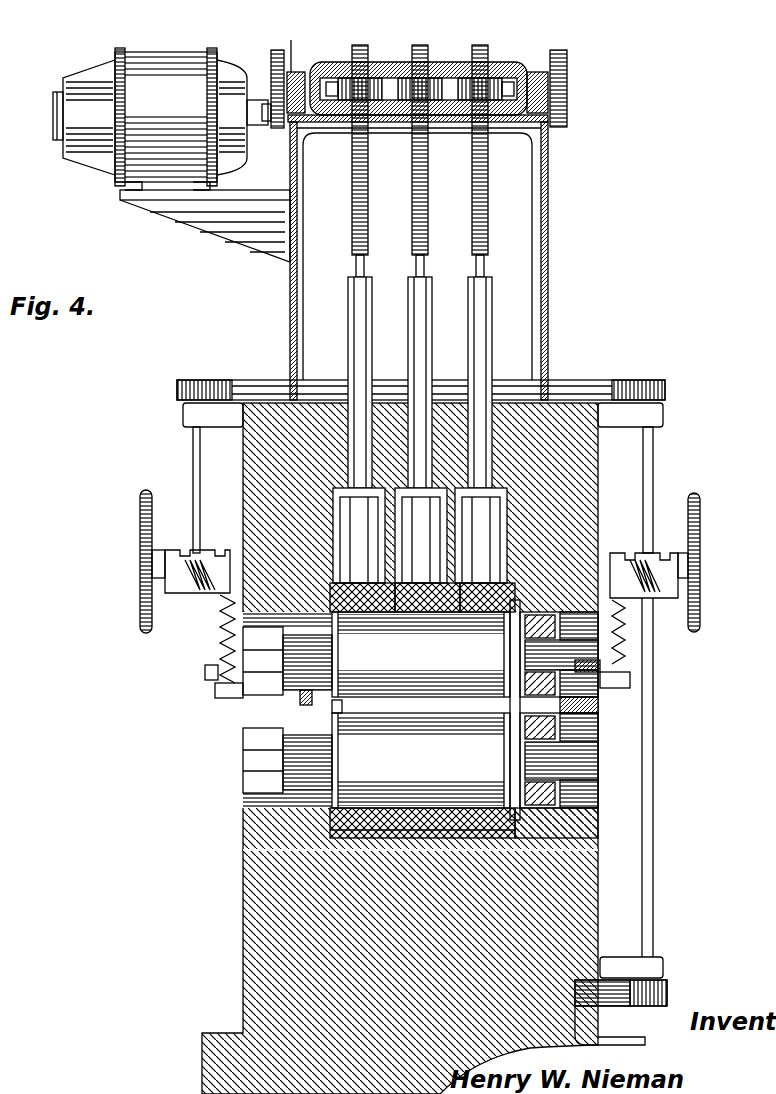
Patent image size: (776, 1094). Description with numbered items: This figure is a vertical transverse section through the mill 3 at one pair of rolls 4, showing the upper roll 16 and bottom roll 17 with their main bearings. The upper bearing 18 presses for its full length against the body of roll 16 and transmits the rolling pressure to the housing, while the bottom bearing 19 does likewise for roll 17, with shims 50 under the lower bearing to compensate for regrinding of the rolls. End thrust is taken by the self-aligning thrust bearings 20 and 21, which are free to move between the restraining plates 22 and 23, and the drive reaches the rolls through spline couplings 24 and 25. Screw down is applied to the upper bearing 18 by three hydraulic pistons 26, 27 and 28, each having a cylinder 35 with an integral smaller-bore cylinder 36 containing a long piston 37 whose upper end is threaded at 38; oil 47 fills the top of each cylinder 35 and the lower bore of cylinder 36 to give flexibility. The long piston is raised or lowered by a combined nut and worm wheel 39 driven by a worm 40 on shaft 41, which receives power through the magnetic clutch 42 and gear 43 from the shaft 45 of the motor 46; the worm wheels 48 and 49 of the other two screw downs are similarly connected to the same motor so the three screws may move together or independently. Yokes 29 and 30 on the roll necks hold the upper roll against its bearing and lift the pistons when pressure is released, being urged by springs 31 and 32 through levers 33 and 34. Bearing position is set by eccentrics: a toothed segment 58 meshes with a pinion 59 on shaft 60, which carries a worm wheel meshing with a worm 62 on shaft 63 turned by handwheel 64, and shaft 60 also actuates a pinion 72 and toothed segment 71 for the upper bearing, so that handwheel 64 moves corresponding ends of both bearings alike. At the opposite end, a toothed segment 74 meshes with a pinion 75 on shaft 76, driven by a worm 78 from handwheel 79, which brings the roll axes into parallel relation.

The mill 3 is at (245, 930).
The pair of rolls 4 is at (335, 725).
The upper roll 16 is at (421, 654).
The bottom roll 17 is at (421, 760).
The upper bearing 18 is at (330, 583).
The bottom bearing 19 is at (330, 822).
The thrust bearing 20 is at (512, 645).
The thrust bearing 21 is at (520, 740).
The restraining plate 22 is at (557, 830).
The restraining plate 23 is at (598, 808).
The spline coupling 24 is at (243, 632).
The spline coupling 25 is at (243, 764).
The hydraulic piston 26 is at (362, 615).
The hydraulic piston 27 is at (427, 612).
The hydraulic piston 28 is at (484, 612).
The yoke 29 is at (300, 702).
The yoke 30 is at (585, 695).
The spring 31 is at (625, 633).
The spring 32 is at (222, 645).
The lever 33 is at (628, 684).
The lever 34 is at (215, 690).
The cylinder 35 is at (507, 524).
The cylinder 36 is at (373, 341).
The long piston 37 is at (476, 266).
The threaded upper end 38 is at (368, 212).
The combined nut and worm wheel 39 is at (380, 66).
The worm 40 is at (330, 66).
The shaft 41 is at (291, 42).
The magnetic clutch 42 is at (322, 106).
The gear 43 is at (271, 60).
The motor shaft 45 is at (262, 128).
The motor 46 is at (157, 57).
The oil filling 47 is at (505, 482).
The worm wheel 48 is at (438, 64).
The worm wheel 49 is at (500, 66).
The shims 50 is at (345, 832).
The toothed segment 58 is at (625, 1007).
The pinion 59 is at (668, 993).
The shaft 60 is at (655, 920).
The worm 62 is at (650, 556).
The shaft 63 is at (608, 556).
The handwheel 64 is at (700, 593).
The toothed segment 71 is at (598, 382).
The pinion 72 is at (666, 388).
The toothed segment 74 is at (228, 380).
The pinion 75 is at (177, 392).
The shaft 76 is at (193, 466).
The worm 78 is at (190, 553).
The handwheel 79 is at (140, 552).